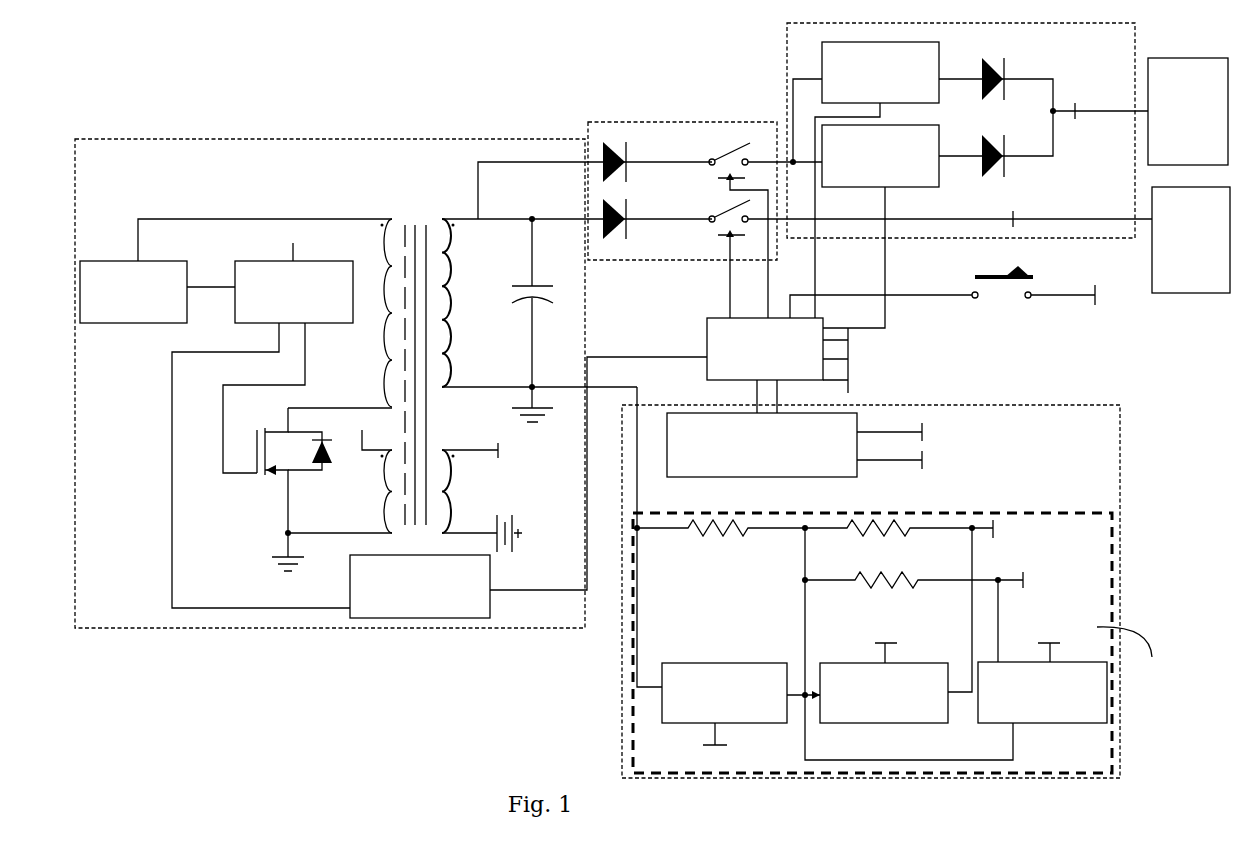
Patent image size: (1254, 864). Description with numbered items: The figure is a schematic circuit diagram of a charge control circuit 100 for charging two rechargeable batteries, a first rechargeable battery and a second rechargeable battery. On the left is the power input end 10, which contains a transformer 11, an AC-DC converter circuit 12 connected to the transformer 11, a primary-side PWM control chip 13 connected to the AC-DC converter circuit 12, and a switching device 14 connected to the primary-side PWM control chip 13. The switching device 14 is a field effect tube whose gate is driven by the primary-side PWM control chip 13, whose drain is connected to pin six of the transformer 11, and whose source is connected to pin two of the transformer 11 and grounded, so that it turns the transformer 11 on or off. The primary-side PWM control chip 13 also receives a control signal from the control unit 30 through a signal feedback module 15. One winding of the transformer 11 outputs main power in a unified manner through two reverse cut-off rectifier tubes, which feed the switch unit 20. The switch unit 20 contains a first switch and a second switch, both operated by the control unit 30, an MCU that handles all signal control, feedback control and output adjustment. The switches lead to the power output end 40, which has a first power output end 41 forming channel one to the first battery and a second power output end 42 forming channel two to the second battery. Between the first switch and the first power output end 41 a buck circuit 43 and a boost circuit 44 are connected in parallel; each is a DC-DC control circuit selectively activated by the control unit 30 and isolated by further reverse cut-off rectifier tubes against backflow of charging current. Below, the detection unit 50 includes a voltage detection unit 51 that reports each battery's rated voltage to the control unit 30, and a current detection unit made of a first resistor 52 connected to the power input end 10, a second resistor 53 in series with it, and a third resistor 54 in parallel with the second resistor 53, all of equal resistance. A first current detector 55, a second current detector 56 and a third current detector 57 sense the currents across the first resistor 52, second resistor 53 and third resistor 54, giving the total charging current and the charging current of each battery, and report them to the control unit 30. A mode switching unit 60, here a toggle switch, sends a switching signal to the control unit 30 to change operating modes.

The charge control circuit 100 is at (122, 93).
The power input end 10 is at (273, 162).
The transformer 11 is at (416, 232).
The AC-DC converter circuit 12 is at (110, 270).
The primary-side PWM control chip 13 is at (267, 278).
The switching device 14 is at (255, 452).
The signal feedback module 15 is at (392, 618).
The switch unit 20 is at (645, 128).
The control unit 30 is at (725, 338).
The power output end 40 is at (1062, 45).
The first power output end 41 is at (1065, 108).
The second power output end 42 is at (1005, 206).
The buck circuit 43 is at (908, 52).
The boost circuit 44 is at (842, 135).
The detection unit 50 is at (1088, 475).
The voltage detection unit 51 is at (795, 462).
The first resistor 52 is at (718, 530).
The second resistor 53 is at (897, 522).
The third resistor 54 is at (862, 575).
The first current detector 55 is at (688, 710).
The second current detector 56 is at (848, 715).
The third current detector 57 is at (1083, 712).
The mode switching unit 60 is at (1008, 272).